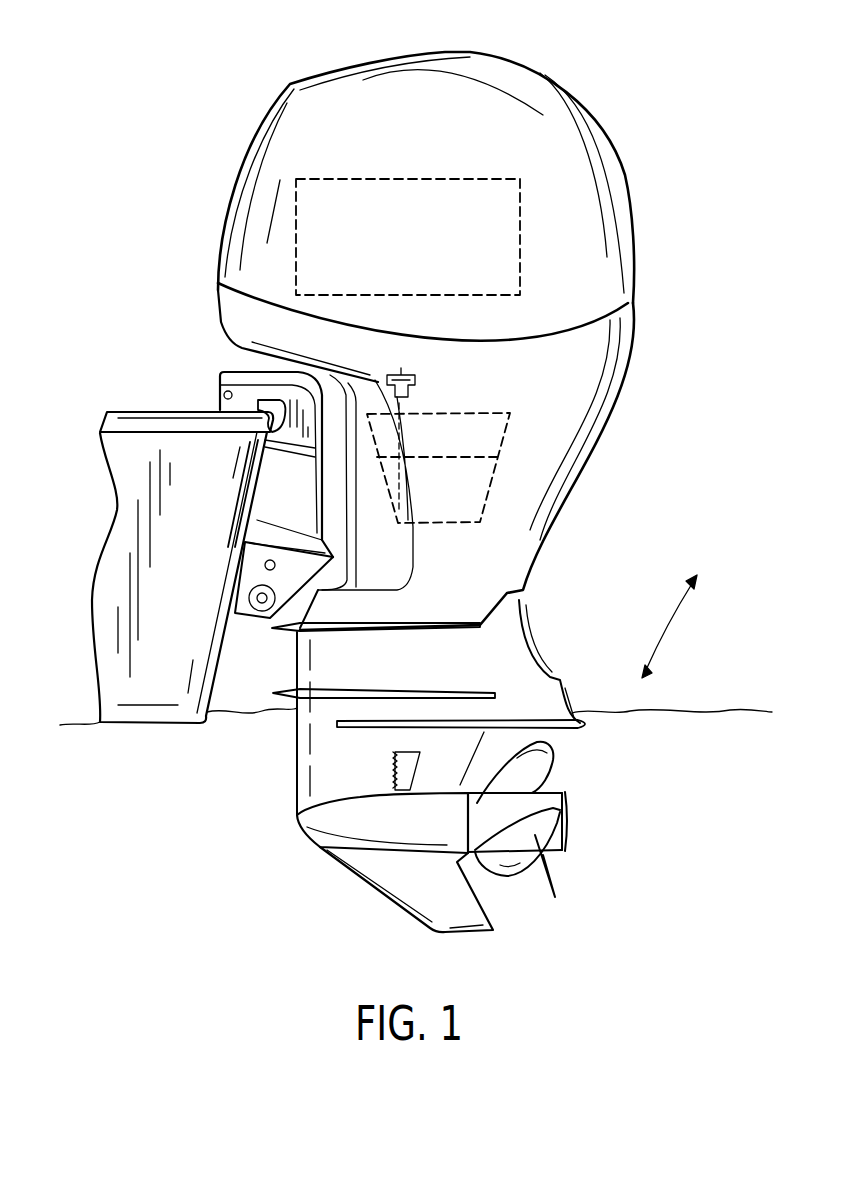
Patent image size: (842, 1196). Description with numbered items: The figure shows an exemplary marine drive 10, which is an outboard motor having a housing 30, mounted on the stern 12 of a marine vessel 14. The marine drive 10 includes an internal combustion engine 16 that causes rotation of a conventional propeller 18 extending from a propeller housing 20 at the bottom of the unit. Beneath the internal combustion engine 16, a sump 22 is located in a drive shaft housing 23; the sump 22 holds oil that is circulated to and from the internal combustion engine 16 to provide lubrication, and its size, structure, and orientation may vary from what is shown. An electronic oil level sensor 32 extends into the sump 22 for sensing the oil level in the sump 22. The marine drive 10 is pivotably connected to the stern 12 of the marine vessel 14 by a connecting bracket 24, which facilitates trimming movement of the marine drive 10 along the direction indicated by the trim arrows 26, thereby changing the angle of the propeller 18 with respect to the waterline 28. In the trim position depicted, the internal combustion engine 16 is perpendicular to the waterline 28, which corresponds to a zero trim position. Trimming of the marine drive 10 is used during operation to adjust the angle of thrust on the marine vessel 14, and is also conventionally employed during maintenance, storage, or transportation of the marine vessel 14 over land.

The marine drive 10 is at (460, 471).
The stern 12 is at (215, 680).
The marine vessel 14 is at (122, 418).
The internal combustion engine 16 is at (408, 178).
The propeller 18 is at (535, 835).
The propeller housing 20 is at (327, 830).
The sump 22 is at (508, 440).
The drive shaft housing 23 is at (565, 520).
The connecting bracket 24 is at (243, 373).
The trim arrows 26 is at (673, 632).
The waterline 28 is at (706, 710).
The housing 30 is at (446, 52).
The electronic oil level sensor 32 is at (403, 372).